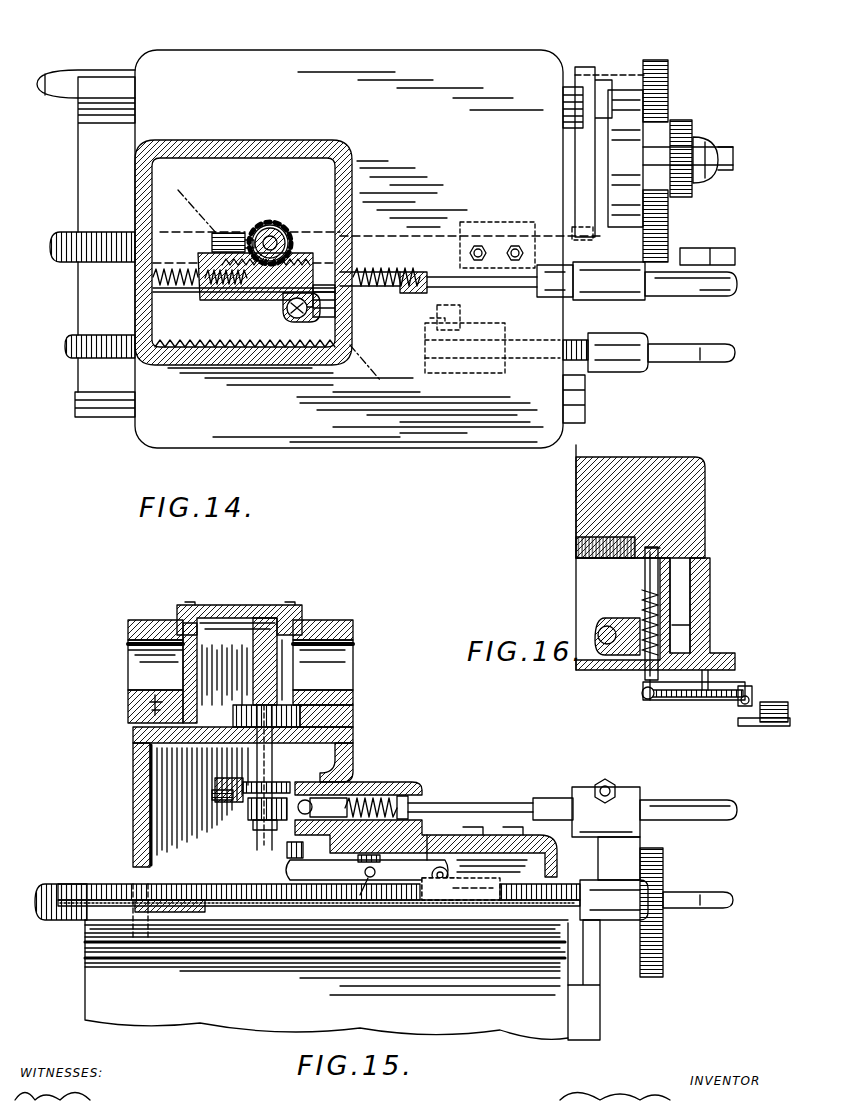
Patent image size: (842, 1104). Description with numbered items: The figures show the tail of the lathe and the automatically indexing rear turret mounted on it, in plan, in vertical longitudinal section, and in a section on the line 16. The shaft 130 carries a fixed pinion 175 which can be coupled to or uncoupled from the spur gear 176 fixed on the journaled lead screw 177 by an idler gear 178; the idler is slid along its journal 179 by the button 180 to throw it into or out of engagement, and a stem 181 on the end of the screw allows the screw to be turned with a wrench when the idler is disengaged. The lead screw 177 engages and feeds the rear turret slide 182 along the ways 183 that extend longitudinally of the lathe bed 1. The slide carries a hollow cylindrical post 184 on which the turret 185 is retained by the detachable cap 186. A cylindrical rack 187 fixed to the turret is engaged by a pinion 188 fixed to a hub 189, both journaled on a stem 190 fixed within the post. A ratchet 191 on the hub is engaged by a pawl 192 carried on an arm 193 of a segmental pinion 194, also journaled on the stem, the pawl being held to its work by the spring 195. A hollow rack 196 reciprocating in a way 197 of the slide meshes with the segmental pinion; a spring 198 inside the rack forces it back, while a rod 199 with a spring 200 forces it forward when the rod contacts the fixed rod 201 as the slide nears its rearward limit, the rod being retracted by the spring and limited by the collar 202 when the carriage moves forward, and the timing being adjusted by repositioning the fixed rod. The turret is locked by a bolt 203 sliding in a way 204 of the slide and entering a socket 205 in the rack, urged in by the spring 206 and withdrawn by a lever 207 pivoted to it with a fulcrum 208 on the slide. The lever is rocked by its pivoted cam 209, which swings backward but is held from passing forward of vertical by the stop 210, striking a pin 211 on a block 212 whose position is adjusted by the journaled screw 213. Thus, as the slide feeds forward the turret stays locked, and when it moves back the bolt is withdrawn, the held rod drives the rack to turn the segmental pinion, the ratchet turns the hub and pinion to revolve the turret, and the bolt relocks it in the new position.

In FIG. 15, the lathe bed 1 is at (585, 1040).
In FIG. 14, the spur gear 16 is at (284, 282).
In FIG. 14, the shaft 130 is at (58, 70).
In FIG. 14, the pinion 175 is at (668, 68).
In FIG. 14, the spur gear 176 is at (668, 232).
In FIG. 15, the spur gear 176 is at (664, 960).
In FIG. 14, the lead screw 177 is at (60, 235).
In FIG. 15, the lead screw 177 is at (55, 921).
In FIG. 14, the idler gear 178 is at (694, 135).
In FIG. 14, the journal 179 is at (660, 150).
In FIG. 14, the button 180 is at (718, 145).
In FIG. 14, the stem 181 is at (705, 250).
In FIG. 14, the rear turret slide 182 is at (400, 52).
In FIG. 16, the rear turret slide 182 is at (710, 574).
In FIG. 15, the rear turret slide 182 is at (133, 806).
In FIG. 14, the ways 183 is at (108, 77).
In FIG. 15, the hollow cylindrical post 184 is at (165, 672).
In FIG. 16, the turret 185 is at (706, 508).
In FIG. 15, the turret 185 is at (330, 620).
In FIG. 15, the detachable cap 186 is at (238, 605).
In FIG. 16, the cylindrical rack 187 is at (576, 546).
In FIG. 15, the cylindrical rack 187 is at (353, 710).
In FIG. 15, the pinion 188 is at (300, 712).
In FIG. 15, the hub 189 is at (300, 753).
In FIG. 14, the stem 190 is at (290, 242).
In FIG. 15, the stem 190 is at (268, 635).
In FIG. 14, the ratchet 191 is at (282, 232).
In FIG. 15, the ratchet 191 is at (258, 790).
In FIG. 14, the pawl 192 is at (264, 232).
In FIG. 15, the pawl 192 is at (255, 822).
In FIG. 14, the arm 193 is at (218, 233).
In FIG. 15, the arm 193 is at (220, 805).
In FIG. 14, the segmental pinion 194 is at (275, 222).
In FIG. 15, the segmental pinion 194 is at (288, 795).
In FIG. 15, the spring 195 is at (220, 800).
In FIG. 14, the hollow rack 196 is at (286, 300).
In FIG. 15, the hollow rack 196 is at (320, 790).
In FIG. 14, the way 197 is at (232, 298).
In FIG. 15, the way 197 is at (405, 797).
In FIG. 14, the spring 198 is at (195, 296).
In FIG. 14, the rod 199 is at (490, 287).
In FIG. 15, the rod 199 is at (482, 803).
In FIG. 14, the spring 200 is at (366, 274).
In FIG. 15, the spring 200 is at (375, 795).
In FIG. 14, the fixed rod 201 is at (722, 293).
In FIG. 15, the fixed rod 201 is at (552, 797).
In FIG. 15, the collar 202 is at (410, 796).
In FIG. 14, the bolt 203 is at (292, 322).
In FIG. 16, the bolt 203 is at (645, 575).
In FIG. 15, the bolt 203 is at (287, 852).
In FIG. 16, the way 204 is at (642, 602).
In FIG. 16, the socket 205 is at (665, 548).
In FIG. 16, the spring 206 is at (692, 624).
In FIG. 14, the lever 207 is at (343, 323).
In FIG. 16, the lever 207 is at (665, 700).
In FIG. 15, the lever 207 is at (287, 871).
In FIG. 16, the fulcrum 208 is at (704, 698).
In FIG. 15, the fulcrum 208 is at (360, 895).
In FIG. 14, the pivoted cam 209 is at (430, 323).
In FIG. 15, the pivoted cam 209 is at (441, 866).
In FIG. 16, the stop 210 is at (744, 684).
In FIG. 15, the stop 210 is at (428, 860).
In FIG. 14, the pin 211 is at (470, 362).
In FIG. 15, the pin 211 is at (425, 918).
In FIG. 14, the block 212 is at (508, 370).
In FIG. 16, the block 212 is at (757, 725).
In FIG. 15, the block 212 is at (478, 902).
In FIG. 14, the journaled screw 213 is at (70, 345).
In FIG. 15, the journaled screw 213 is at (82, 884).